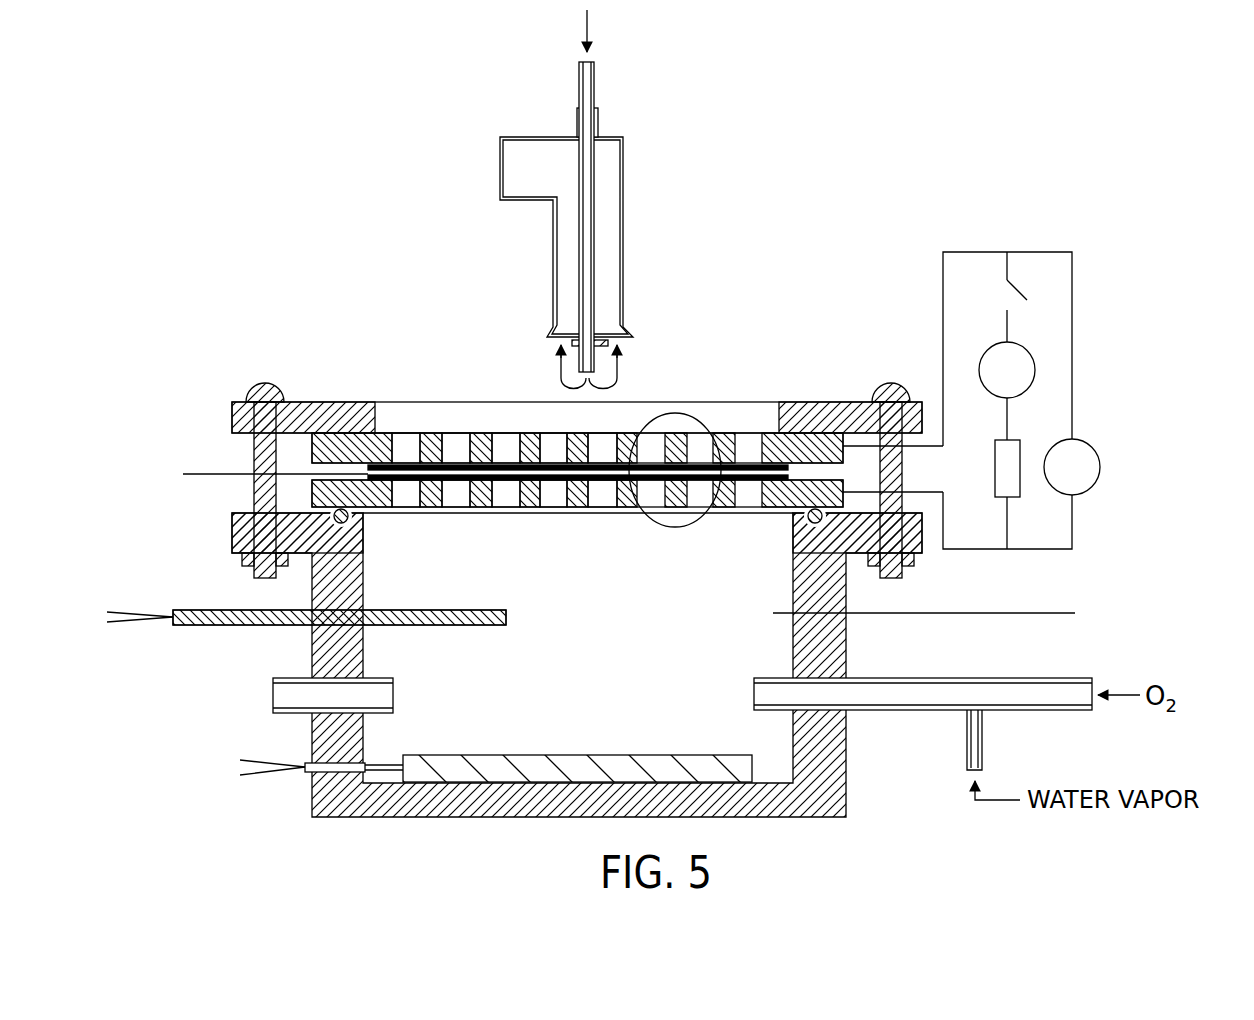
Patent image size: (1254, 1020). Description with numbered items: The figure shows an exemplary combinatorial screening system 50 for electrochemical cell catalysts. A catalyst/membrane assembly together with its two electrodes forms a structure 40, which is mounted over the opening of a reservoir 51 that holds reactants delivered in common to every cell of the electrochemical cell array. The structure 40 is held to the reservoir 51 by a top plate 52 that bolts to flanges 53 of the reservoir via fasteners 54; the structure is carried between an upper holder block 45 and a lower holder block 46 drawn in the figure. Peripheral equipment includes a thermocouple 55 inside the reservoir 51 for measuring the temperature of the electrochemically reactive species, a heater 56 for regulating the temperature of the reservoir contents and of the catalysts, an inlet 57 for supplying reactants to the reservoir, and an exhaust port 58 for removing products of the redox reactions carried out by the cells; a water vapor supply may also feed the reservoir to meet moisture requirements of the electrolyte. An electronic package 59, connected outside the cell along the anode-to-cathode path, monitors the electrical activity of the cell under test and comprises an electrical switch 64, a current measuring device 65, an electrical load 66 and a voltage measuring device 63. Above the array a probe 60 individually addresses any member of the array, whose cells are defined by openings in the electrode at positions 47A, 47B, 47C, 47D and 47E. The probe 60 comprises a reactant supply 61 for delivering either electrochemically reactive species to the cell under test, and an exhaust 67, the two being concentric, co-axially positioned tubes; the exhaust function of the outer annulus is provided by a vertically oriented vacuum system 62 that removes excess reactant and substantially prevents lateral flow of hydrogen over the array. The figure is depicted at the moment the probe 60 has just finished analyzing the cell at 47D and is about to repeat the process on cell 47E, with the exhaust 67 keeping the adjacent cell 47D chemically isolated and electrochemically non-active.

The structure 40 is at (692, 418).
The upper holder block 45 is at (806, 445).
The lower holder block 46 is at (826, 487).
The electrochemical cell 47A is at (407, 450).
The electrochemical cell 47B is at (457, 450).
The electrochemical cell 47C is at (505, 450).
The electrochemical cell 47D is at (553, 450).
The electrochemical cell 47E is at (603, 450).
The combinatorial screening system 50 is at (1185, 143).
The reservoir 51 is at (666, 594).
The top plate 52 is at (232, 420).
The flanges 53 is at (232, 527).
The fasteners 54 is at (263, 388).
The thermocouple 55 is at (425, 610).
The heater 56 is at (441, 755).
The inlet 57 is at (912, 712).
The exhaust port 58 is at (270, 696).
The electronic package 59 is at (1091, 393).
The probe 60 is at (589, 199).
The reactant supply 61 is at (596, 197).
The vacuum system 62 is at (495, 170).
The voltage measuring device 63 is at (1116, 468).
The electrical switch 64 is at (1028, 299).
The current measuring device 65 is at (1036, 370).
The electrical load 66 is at (1021, 452).
The exhaust 67 is at (631, 345).